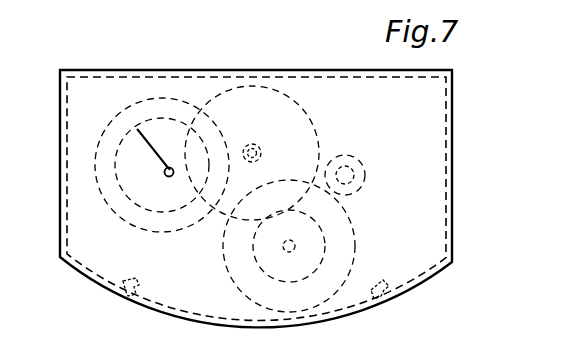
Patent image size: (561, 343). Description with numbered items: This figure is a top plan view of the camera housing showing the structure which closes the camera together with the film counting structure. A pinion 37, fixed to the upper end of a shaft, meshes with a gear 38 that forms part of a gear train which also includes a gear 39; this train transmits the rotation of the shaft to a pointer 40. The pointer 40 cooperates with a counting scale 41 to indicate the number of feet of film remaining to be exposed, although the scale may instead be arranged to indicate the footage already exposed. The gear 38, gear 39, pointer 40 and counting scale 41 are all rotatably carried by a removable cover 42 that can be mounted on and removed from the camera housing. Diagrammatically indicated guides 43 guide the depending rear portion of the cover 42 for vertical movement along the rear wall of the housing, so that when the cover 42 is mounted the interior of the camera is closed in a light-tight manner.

The pinion 37 is at (366, 167).
The gear 38 is at (356, 225).
The gear 39 is at (315, 129).
The pointer 40 is at (155, 140).
The counting scale 41 is at (128, 133).
The removable cover 42 is at (454, 201).
The guides 43 is at (126, 287).